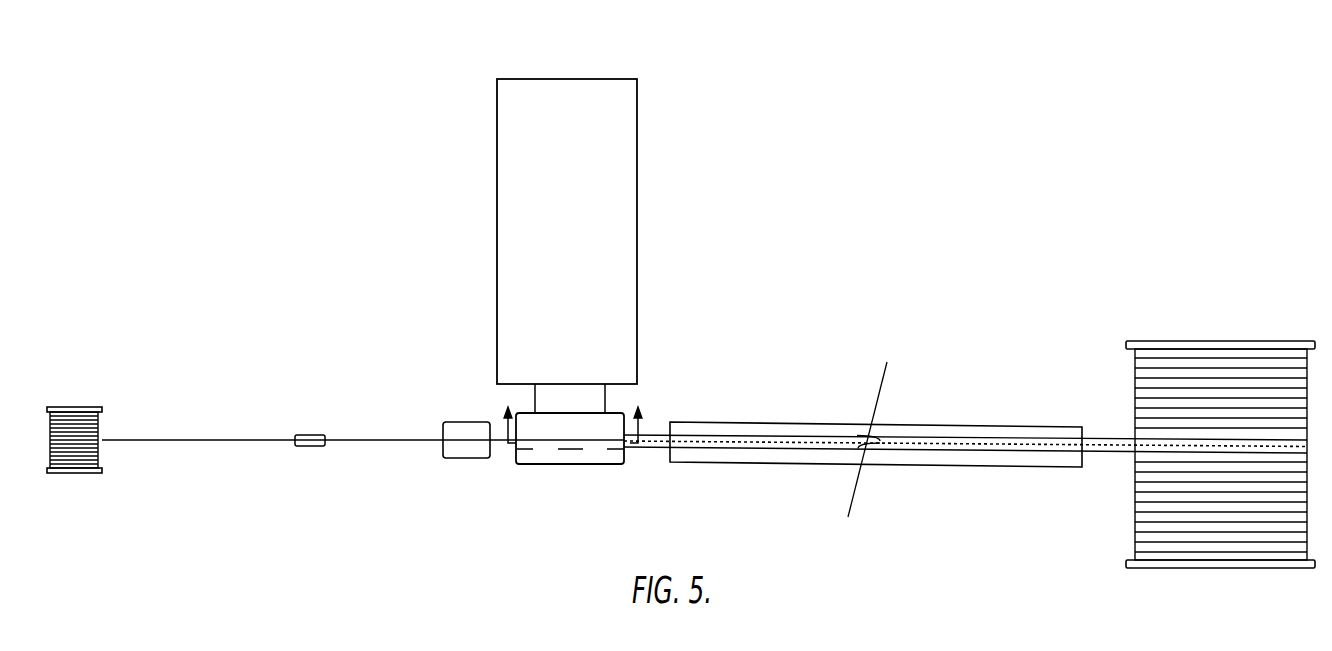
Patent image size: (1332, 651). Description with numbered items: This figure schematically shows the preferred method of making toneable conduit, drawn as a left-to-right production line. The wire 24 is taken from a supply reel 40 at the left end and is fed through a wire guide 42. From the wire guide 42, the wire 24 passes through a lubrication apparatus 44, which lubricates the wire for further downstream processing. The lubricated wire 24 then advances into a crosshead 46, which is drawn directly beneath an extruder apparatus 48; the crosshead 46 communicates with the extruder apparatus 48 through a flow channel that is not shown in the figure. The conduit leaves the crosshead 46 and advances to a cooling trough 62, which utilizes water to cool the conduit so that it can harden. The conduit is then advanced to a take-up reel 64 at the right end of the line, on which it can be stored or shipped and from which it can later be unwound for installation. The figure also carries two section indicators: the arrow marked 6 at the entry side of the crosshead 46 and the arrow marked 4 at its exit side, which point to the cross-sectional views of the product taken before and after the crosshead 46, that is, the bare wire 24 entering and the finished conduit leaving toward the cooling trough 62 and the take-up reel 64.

The wire 24 is at (170, 439).
The supply reel 40 is at (108, 455).
The wire guide 42 is at (325, 452).
The lubrication apparatus 44 is at (480, 421).
The crosshead 46 is at (589, 475).
The extruder apparatus 48 is at (562, 72).
The cooling trough 62 is at (820, 415).
The take-up reel 64 is at (1276, 332).
The section line for FIG. 6 is at (508, 446).
The section line for FIG. 4 is at (639, 446).